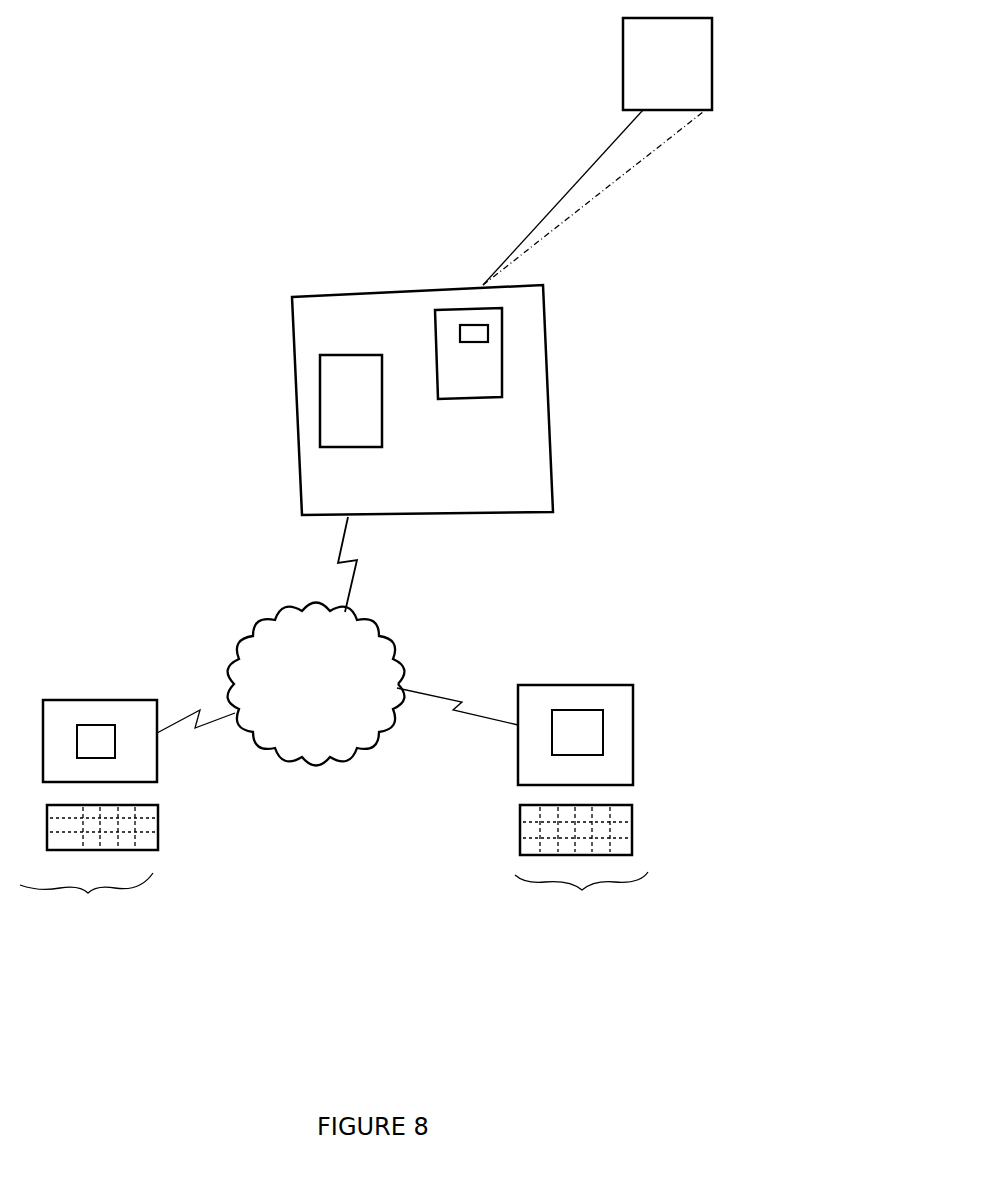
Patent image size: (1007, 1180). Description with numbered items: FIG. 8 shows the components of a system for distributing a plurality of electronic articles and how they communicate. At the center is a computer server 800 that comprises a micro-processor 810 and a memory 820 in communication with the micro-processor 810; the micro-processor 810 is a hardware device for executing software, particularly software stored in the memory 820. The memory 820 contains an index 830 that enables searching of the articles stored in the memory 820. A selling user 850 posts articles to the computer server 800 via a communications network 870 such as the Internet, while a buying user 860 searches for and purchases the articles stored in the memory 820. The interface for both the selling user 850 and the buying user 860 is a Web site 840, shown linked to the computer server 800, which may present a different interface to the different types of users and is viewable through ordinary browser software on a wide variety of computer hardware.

The computer server 800 is at (441, 280).
The micro-processor 810 is at (333, 378).
The memory 820 is at (483, 382).
The index 830 is at (485, 332).
The Web site 840 is at (703, 72).
The user 850 is at (127, 847).
The user 860 is at (522, 835).
The communications network 870 is at (328, 770).